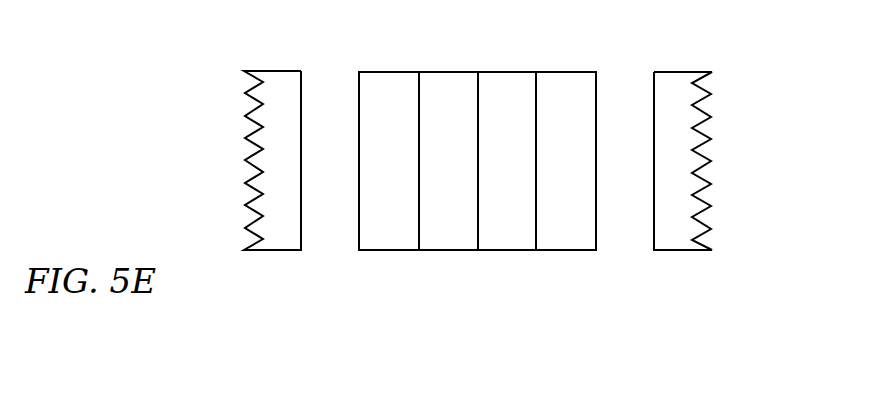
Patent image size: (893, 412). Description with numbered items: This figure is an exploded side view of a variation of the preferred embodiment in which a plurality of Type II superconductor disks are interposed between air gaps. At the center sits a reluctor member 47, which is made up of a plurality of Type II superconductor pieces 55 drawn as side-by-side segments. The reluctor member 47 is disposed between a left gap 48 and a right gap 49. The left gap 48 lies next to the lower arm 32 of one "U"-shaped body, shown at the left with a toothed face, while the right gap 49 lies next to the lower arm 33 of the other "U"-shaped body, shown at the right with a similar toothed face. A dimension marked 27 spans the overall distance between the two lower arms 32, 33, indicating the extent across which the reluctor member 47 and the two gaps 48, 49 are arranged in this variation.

The gap width between teeth sections 27 is at (654, 70).
The lower arm 32 is at (276, 108).
The lower arm 33 is at (680, 110).
The reluctor member 47 is at (516, 273).
The left gap 48 is at (333, 183).
The right gap 49 is at (620, 184).
The Type II superconductor pieces 55 is at (452, 217).